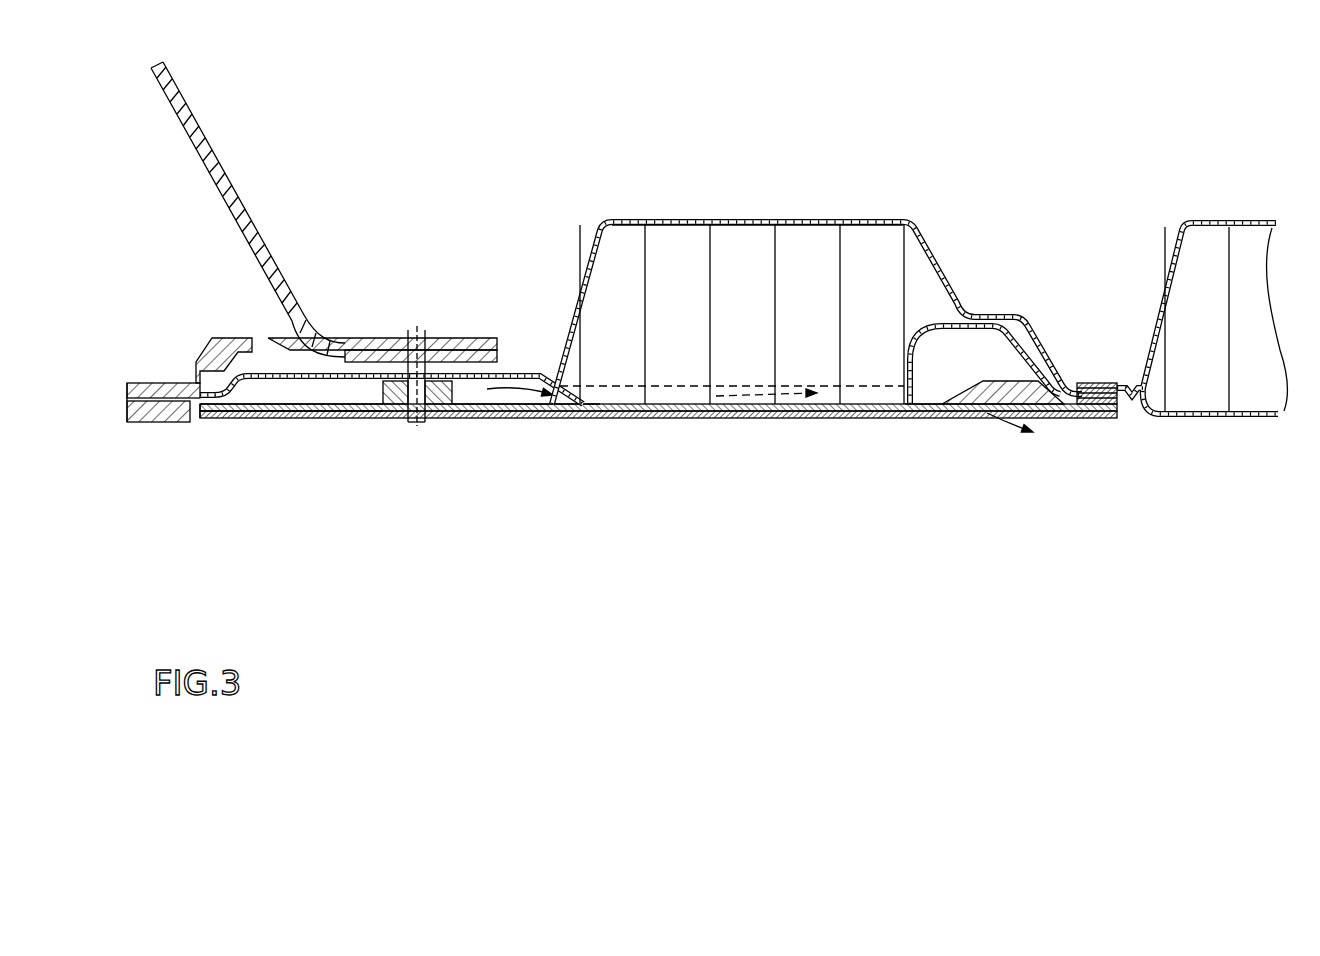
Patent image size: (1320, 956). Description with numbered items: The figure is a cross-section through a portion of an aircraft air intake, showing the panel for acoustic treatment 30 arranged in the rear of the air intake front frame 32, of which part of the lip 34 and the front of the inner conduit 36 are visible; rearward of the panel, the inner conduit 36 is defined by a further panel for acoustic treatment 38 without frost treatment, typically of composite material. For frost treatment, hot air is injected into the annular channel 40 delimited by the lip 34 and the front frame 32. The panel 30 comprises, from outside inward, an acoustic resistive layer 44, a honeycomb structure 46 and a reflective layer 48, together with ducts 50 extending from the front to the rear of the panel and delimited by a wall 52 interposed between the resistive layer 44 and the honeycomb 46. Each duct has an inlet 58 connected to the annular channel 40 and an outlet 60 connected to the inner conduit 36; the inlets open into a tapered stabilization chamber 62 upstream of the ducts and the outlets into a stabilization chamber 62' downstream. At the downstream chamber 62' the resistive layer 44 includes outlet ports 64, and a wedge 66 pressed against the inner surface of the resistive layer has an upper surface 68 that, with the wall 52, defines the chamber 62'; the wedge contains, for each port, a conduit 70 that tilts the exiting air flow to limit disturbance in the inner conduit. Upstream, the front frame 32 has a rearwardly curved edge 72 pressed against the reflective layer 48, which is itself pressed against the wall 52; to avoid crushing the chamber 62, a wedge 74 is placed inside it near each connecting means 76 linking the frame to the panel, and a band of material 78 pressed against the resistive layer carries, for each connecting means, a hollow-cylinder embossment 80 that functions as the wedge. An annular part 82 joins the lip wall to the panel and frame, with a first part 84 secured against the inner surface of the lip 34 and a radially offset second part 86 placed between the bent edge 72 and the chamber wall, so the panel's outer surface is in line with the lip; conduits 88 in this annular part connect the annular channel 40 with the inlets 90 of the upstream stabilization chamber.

The panel for acoustic treatment 30 is at (677, 166).
The front frame 32 is at (268, 262).
The lip 34 is at (164, 423).
The inner conduit 36 is at (795, 567).
The panel for acoustic treatment without frost treatment 38 is at (1250, 250).
The annular channel 40 is at (227, 209).
The acoustic resistive layer 44 is at (705, 422).
The honeycomb structure 46 is at (840, 238).
The reflective layer 48 is at (770, 219).
The ducts 50 is at (640, 422).
The wall 52 is at (590, 421).
The inlet 58 is at (545, 421).
The outlet 60 is at (918, 340).
The stabilization chamber 62 is at (492, 486).
The stabilization chamber 62' is at (912, 446).
The outlet ports 64 is at (990, 421).
The wedge 66 is at (1042, 384).
The upper surface 68 is at (1002, 318).
The conduit 70 is at (975, 402).
The rearwardly curved edge 72 is at (395, 340).
The wedge 74 is at (440, 384).
The connecting means 76 is at (404, 428).
The band of material 78 is at (347, 421).
The embossment 80 is at (390, 421).
The annular part 82 is at (205, 357).
The first part 84 is at (128, 383).
The second part 86 is at (355, 343).
The conduits 88 is at (306, 392).
The inlets 90 is at (255, 330).